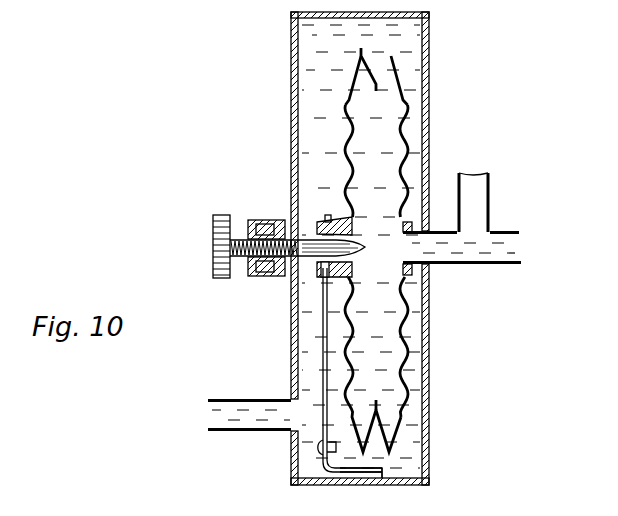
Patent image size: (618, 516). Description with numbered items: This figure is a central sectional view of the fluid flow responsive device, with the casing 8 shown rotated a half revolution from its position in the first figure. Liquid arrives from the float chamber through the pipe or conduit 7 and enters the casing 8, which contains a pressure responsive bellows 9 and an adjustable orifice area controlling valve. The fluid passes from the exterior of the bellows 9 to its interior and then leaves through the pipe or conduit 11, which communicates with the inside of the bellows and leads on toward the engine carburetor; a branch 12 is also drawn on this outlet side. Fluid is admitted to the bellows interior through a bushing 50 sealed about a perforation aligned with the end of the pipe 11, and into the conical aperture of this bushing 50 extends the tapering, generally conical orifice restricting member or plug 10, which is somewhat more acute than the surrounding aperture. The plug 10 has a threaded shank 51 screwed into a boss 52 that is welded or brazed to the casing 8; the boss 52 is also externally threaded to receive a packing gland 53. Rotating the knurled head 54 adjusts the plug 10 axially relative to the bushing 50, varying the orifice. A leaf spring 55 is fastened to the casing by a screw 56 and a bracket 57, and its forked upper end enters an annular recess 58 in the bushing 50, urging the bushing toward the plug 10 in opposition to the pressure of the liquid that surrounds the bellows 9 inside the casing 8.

The pipe or conduit 7 is at (221, 399).
The casing 8 is at (398, 484).
The bellows 9 is at (402, 412).
The orifice restricting member or plug 10 is at (313, 242).
The pipe or conduit 11 is at (443, 265).
The branch pipe 12 is at (489, 206).
The bushing 50 is at (342, 214).
The threaded shank 51 is at (247, 262).
The boss 52 is at (283, 278).
The packing gland 53 is at (263, 278).
The knurled head 54 is at (213, 254).
The leaf spring 55 is at (323, 378).
The screw 56 is at (315, 447).
The bracket 57 is at (333, 482).
The annular recess 58 is at (330, 280).